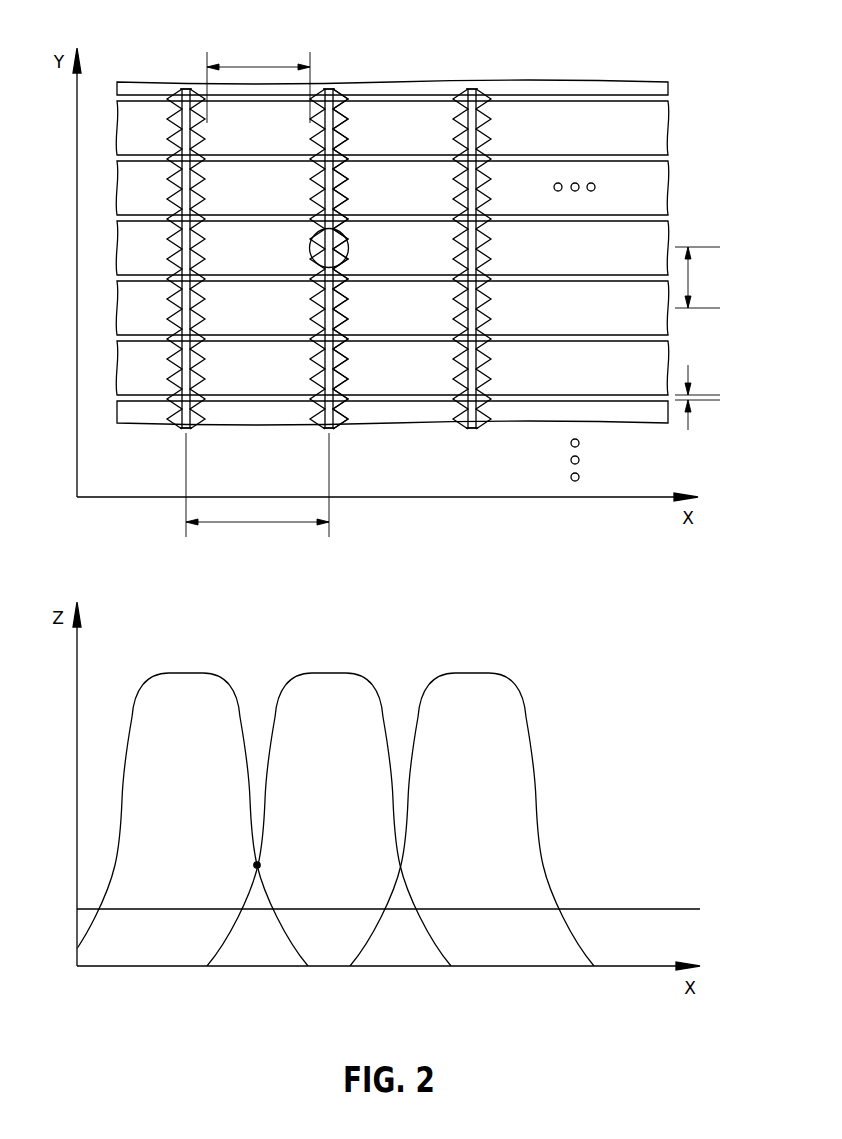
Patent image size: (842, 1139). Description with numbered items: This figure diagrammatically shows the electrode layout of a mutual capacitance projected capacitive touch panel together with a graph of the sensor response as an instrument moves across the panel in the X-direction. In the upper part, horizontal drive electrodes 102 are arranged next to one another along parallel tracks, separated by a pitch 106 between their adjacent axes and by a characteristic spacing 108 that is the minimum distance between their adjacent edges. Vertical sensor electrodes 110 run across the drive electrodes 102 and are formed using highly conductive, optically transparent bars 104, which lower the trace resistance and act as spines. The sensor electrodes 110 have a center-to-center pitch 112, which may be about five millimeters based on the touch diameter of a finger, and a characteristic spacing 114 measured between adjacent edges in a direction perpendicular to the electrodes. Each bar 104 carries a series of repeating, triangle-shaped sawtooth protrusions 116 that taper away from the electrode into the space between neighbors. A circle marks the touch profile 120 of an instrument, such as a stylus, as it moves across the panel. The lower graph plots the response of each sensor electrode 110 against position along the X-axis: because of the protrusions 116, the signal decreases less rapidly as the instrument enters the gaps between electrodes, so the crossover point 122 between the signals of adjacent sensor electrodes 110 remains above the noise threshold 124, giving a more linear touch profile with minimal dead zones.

The drive electrode 102 is at (653, 130).
The bar 104 is at (478, 366).
The pitch 106 is at (702, 277).
The characteristic spacing 108 is at (702, 397).
The sensor electrode 110 is at (483, 145).
The pitch 112 is at (257, 492).
The characteristic spacing 114 is at (258, 82).
The protrusion 116 is at (333, 338).
The touch profile 120 is at (340, 222).
The crossover point 122 is at (255, 866).
The noise threshold 124 is at (623, 909).